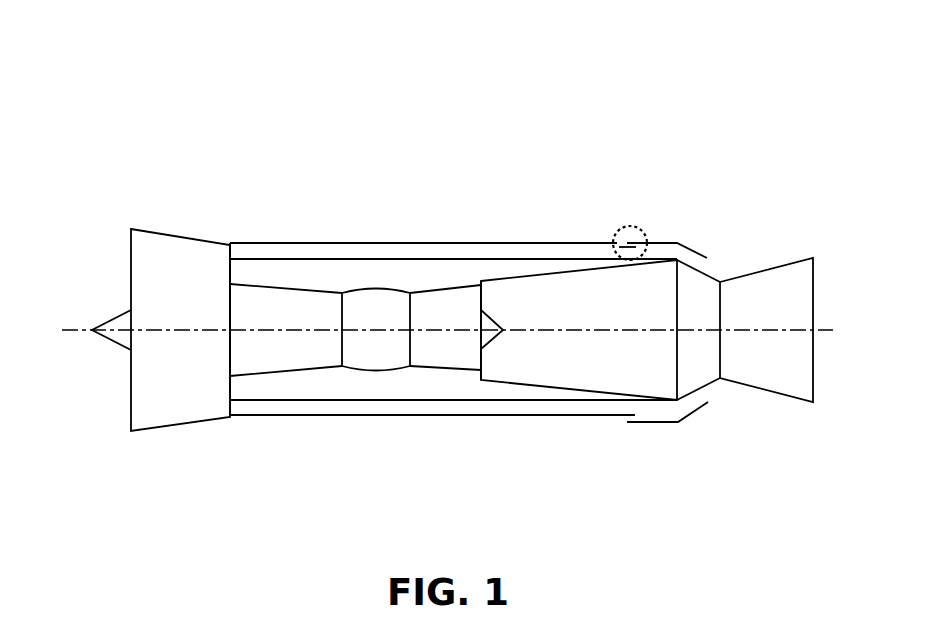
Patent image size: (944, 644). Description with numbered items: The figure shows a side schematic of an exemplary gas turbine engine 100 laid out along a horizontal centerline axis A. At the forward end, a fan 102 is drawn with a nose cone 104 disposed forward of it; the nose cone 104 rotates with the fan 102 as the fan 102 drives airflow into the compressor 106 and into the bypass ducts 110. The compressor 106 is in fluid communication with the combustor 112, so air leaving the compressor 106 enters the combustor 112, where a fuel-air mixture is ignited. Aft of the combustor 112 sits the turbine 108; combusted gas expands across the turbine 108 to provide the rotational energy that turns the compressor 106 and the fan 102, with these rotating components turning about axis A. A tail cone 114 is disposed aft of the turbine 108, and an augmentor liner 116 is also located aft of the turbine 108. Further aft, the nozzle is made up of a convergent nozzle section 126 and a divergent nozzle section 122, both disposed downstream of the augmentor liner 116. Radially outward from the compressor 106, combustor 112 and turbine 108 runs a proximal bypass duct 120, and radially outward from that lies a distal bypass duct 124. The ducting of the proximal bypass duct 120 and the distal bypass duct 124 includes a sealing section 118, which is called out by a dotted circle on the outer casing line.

The gas turbine engine 100 is at (262, 108).
The fan 102 is at (162, 248).
The nose cone 104 is at (123, 340).
The compressor 106 is at (305, 300).
The turbine 108 is at (442, 300).
The bypass ducts 110 is at (295, 406).
The combustor 112 is at (374, 365).
The tail cone 114 is at (488, 313).
The augmentor liner 116 is at (532, 385).
The sealing section 118 is at (635, 227).
The proximal bypass duct 120 is at (585, 402).
The divergent nozzle section 122 is at (773, 275).
The distal bypass duct 124 is at (642, 422).
The convergent nozzle section 126 is at (710, 382).